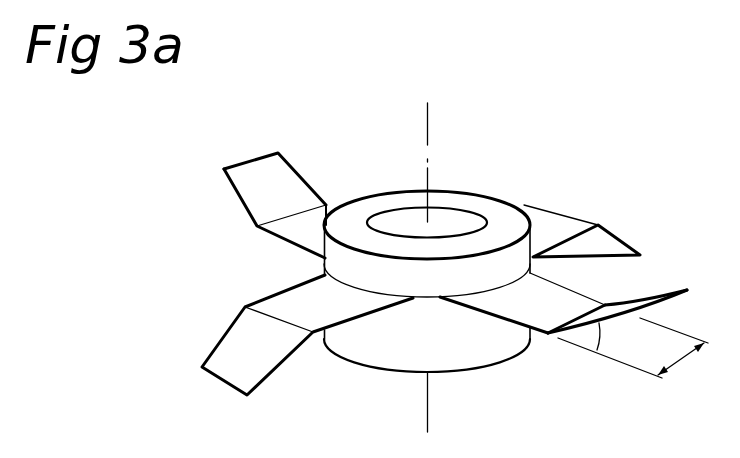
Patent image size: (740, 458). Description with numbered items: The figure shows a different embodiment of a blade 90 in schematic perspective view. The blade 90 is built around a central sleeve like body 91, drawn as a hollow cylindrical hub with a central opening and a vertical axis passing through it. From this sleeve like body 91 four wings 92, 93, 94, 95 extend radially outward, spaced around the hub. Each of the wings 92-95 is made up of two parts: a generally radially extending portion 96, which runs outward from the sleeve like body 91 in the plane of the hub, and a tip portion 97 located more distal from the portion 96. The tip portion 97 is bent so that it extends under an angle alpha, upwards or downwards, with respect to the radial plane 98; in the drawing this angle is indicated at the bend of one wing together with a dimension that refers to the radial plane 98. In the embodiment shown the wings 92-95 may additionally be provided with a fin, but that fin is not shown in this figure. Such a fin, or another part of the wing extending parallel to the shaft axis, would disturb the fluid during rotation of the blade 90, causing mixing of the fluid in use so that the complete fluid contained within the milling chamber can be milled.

The blade 90 is at (463, 175).
The sleeve like body 91 is at (397, 197).
The wing 92 is at (291, 187).
The wing 93 is at (261, 332).
The wing 94 is at (550, 338).
The wing 95 is at (566, 227).
The generally radially extending portion 96 is at (520, 313).
The tip portion 97 is at (660, 294).
The radial plane 98 is at (635, 350).